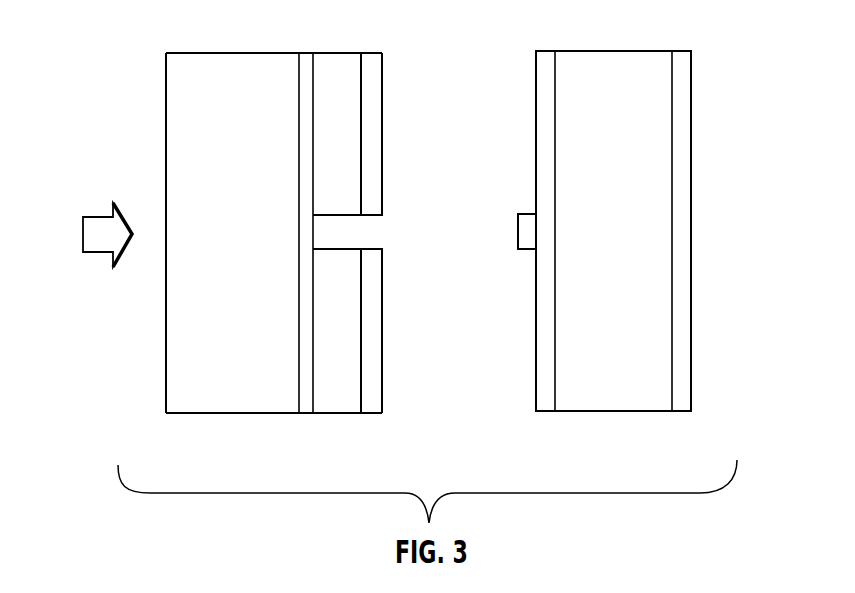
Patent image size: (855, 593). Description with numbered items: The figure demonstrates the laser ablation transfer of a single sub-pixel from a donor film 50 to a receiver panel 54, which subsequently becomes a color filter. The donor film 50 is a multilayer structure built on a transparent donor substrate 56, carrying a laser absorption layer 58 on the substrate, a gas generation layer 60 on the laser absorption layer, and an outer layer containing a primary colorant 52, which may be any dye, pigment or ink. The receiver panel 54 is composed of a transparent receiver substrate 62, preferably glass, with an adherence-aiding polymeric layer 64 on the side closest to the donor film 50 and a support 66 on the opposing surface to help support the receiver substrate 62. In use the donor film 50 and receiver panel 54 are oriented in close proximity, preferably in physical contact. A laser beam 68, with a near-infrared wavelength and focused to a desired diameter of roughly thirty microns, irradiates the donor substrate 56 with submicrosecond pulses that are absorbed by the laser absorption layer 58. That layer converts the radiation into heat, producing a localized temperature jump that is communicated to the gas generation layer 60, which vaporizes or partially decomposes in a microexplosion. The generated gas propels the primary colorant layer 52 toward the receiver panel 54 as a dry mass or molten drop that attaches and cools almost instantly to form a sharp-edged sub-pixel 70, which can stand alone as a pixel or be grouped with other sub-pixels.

The donor film 50 is at (148, 117).
The layer containing a primary colorant 52 is at (383, 90).
The receiver panel 54 is at (705, 182).
The transparent donor substrate 56 is at (216, 414).
The laser absorption layer 58 is at (305, 52).
The gas generation layer 60 is at (338, 414).
The transparent receiver substrate 62 is at (622, 51).
The polymeric layer 64 is at (536, 363).
The support 66 is at (692, 86).
The laser beam 68 is at (99, 216).
The sub-pixel 70 is at (518, 232).